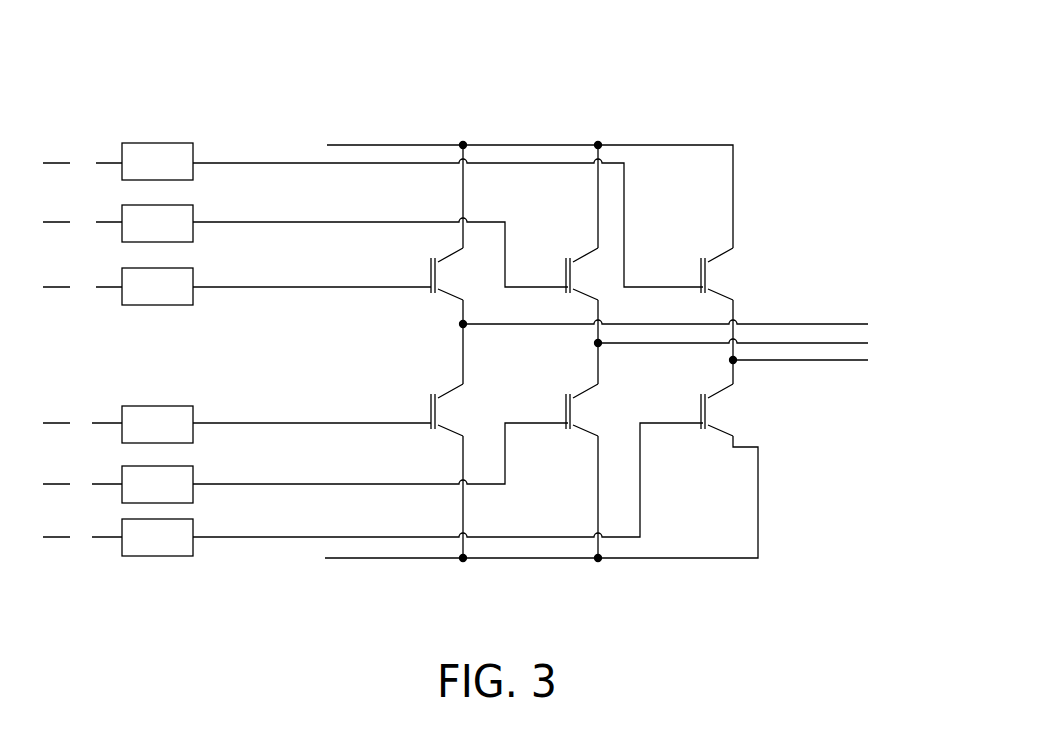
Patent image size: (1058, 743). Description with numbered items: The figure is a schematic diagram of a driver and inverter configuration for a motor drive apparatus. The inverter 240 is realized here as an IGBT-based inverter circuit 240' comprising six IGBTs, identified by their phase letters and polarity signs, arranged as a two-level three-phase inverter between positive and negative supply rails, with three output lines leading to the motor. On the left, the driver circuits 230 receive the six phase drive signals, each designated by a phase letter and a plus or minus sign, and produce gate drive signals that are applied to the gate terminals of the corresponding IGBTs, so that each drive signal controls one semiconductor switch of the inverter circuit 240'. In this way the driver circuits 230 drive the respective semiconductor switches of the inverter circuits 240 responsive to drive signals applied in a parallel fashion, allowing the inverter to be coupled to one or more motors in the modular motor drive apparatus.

The driver circuits 230 is at (159, 82).
The IGBT-based inverter circuit 240' is at (575, 301).
The inverter circuits 240 is at (575, 301).